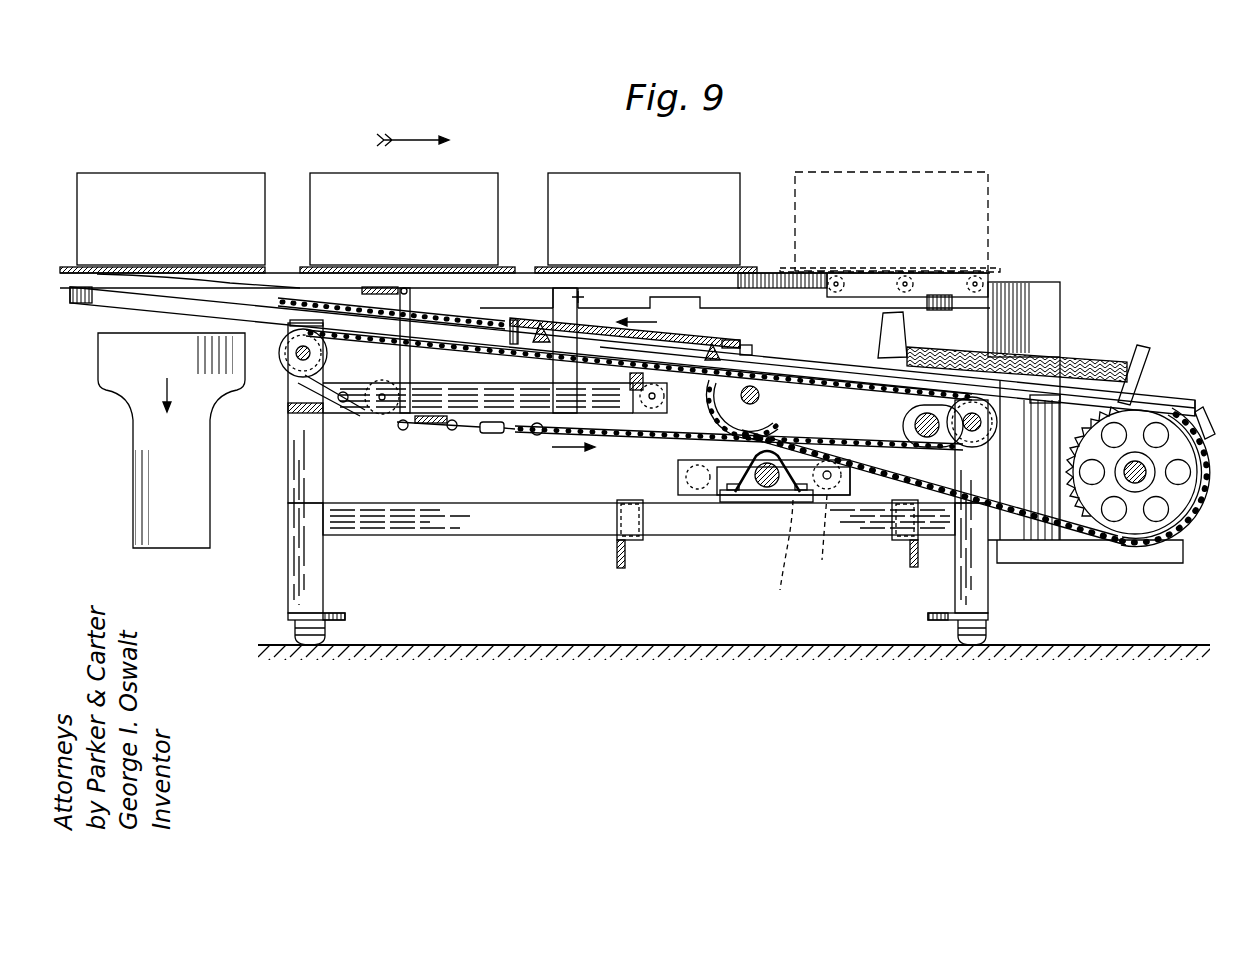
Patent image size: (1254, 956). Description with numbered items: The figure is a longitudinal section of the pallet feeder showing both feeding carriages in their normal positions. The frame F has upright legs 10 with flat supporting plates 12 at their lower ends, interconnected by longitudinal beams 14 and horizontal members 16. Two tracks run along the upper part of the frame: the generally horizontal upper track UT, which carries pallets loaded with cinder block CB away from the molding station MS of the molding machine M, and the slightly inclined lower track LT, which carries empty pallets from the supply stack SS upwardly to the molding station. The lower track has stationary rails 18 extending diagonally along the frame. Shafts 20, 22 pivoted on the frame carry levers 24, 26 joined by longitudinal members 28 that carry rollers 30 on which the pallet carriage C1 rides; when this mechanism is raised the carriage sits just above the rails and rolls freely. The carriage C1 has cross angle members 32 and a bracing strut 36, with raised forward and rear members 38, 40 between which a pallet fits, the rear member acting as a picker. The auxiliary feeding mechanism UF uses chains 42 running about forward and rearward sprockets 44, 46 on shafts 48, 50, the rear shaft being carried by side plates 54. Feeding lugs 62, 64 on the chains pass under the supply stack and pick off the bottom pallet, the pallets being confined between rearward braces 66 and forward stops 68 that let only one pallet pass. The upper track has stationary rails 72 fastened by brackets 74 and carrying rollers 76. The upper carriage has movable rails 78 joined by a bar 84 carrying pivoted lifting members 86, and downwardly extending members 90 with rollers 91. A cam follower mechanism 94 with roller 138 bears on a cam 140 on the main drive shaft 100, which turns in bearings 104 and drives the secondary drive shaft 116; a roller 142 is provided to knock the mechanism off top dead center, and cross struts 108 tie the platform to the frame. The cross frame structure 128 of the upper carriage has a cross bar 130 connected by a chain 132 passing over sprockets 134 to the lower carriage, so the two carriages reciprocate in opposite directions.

The leg 10 is at (290, 540).
The supporting plate 12 is at (335, 615).
The longitudinal beam 14 is at (857, 315).
The horizontal member 16 is at (310, 418).
The stationary rail 18 is at (163, 305).
The shaft 20 is at (990, 443).
The shaft 22 is at (300, 381).
The lever 24 is at (990, 430).
The lever 26 is at (281, 364).
The longitudinal member 28 is at (673, 365).
The roller 30 is at (477, 317).
The cross supporting angle member 32 is at (540, 344).
The bracing strut 36 is at (637, 343).
The forward member 38 is at (508, 320).
The rear member 40 is at (722, 345).
The chain 42 is at (1207, 478).
The forward sprocket 44 is at (772, 398).
The rearward sprocket 46 is at (1068, 476).
The shaft 48 is at (760, 403).
The rear shaft 50 is at (1138, 485).
The side plate 54 is at (1082, 565).
The feeding lug 62 is at (1210, 428).
The feeding lug 64 is at (748, 448).
The rearward brace 66 is at (1148, 350).
The forward stop 68 is at (905, 320).
The stationary rail 72 is at (765, 280).
The bracket 74 is at (945, 310).
The roller 76 is at (837, 274).
The movable rail 78 is at (517, 268).
The bar 84 is at (365, 292).
The lifting member 86 is at (284, 280).
The downwardly extending member 90 is at (378, 440).
The roller 91 is at (668, 413).
The cam follower mechanism 94 is at (680, 493).
The main drive shaft 100 is at (767, 490).
The bearing 104 is at (740, 500).
The cross strut 108 is at (618, 548).
The secondary drive shaft 116 is at (915, 427).
The cross frame structure 128 is at (487, 434).
The cross bar 130 is at (428, 430).
The chain 132 is at (812, 362).
The sprocket 134 is at (300, 412).
The roller 138 is at (829, 520).
The cam 140 is at (783, 552).
The roller 142 is at (685, 477).
The cinder block CB is at (323, 172).
The upper track UT is at (1004, 280).
The supply stack SS is at (1113, 354).
The lower track LT is at (1207, 399).
The molding station MS is at (109, 323).
The molding machine M is at (120, 453).
The frame F is at (288, 472).
The auxiliary feeding mechanism UF is at (1207, 522).
The pallet carriage C1 is at (756, 351).